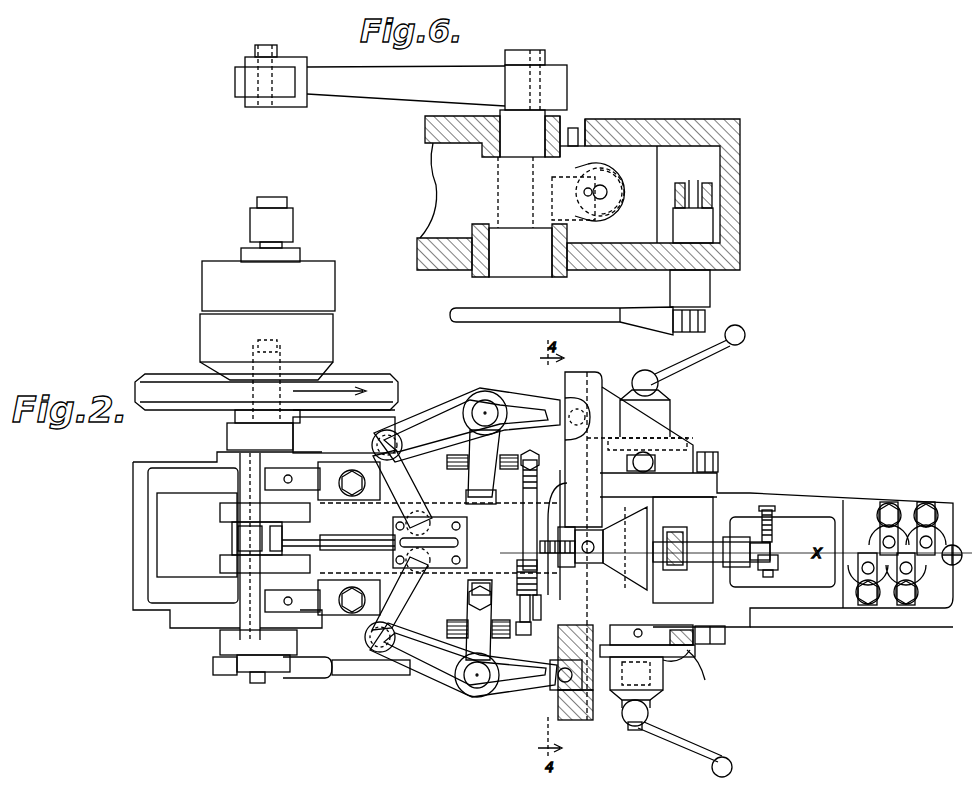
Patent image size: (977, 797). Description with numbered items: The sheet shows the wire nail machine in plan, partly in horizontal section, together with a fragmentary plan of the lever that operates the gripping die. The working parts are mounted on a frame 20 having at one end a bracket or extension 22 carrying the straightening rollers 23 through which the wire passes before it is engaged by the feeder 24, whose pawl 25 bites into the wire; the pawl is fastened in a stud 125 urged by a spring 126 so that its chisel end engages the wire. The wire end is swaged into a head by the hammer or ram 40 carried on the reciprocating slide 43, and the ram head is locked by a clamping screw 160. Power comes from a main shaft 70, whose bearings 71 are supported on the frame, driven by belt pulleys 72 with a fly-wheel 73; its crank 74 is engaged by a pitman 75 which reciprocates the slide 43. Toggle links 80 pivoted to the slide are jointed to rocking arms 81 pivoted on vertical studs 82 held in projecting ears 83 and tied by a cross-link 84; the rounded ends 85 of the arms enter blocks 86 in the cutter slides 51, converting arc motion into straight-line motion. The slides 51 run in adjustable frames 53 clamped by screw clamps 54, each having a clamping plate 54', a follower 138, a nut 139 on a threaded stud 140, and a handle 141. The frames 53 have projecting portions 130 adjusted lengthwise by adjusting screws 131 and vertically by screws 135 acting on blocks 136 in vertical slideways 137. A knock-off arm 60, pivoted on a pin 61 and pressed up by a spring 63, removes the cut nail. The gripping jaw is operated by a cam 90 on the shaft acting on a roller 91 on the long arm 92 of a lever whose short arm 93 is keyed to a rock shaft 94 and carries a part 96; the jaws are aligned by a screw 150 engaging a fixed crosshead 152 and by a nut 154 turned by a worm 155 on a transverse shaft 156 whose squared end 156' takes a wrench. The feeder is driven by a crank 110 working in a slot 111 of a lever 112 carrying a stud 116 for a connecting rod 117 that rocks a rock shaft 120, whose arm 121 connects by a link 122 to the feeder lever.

In FIG. 6, the frame 20 is at (425, 124).
In FIG. 2, the frame 20 is at (745, 462).
In FIG. 2, the bracket or extension 22 is at (851, 626).
In FIG. 2, the straightening rollers 23 is at (880, 528).
In FIG. 2, the feeder 24 is at (745, 580).
In FIG. 2, the pawl 25 is at (778, 547).
In FIG. 2, the hammer or ram 40 is at (556, 520).
In FIG. 2, the reciprocating slide 43 is at (445, 527).
In FIG. 2, the slides 51 is at (566, 567).
In FIG. 2, the adjustable frame 53 is at (580, 380).
In FIG. 2, the screw clamp 54 is at (677, 512).
In FIG. 2, the clamping plate 54' is at (696, 678).
In FIG. 2, the knock-off arm 60 is at (537, 630).
In FIG. 2, the pin 61 is at (527, 520).
In FIG. 2, the spring 63 is at (517, 582).
In FIG. 2, the main shaft 70 is at (250, 240).
In FIG. 2, the shaft 71 is at (250, 477).
In FIG. 2, the belt pulleys 72 is at (251, 340).
In FIG. 2, the fly-wheel 73 is at (172, 374).
In FIG. 2, the crank 74 is at (222, 537).
In FIG. 2, the pitman or connecting rod 75 is at (338, 542).
In FIG. 2, the toggle links 80 is at (398, 478).
In FIG. 2, the rocking arms 81 is at (440, 425).
In FIG. 2, the vertical studs 82 is at (485, 413).
In FIG. 2, the projecting ears 83 is at (508, 438).
In FIG. 2, the cross-link 84 is at (483, 467).
In FIG. 2, the rounded ends 85 is at (570, 410).
In FIG. 2, the blocks 86 is at (556, 702).
In FIG. 2, the cam 90 is at (235, 418).
In FIG. 6, the roller 91 is at (235, 80).
In FIG. 2, the roller 91 is at (227, 436).
In FIG. 6, the long arm 92 is at (380, 90).
In FIG. 2, the long arm 92 is at (344, 431).
In FIG. 6, the short arm 93 is at (597, 216).
In FIG. 6, the rock shaft 94 is at (521, 169).
In FIG. 6, the part 96 is at (607, 188).
In FIG. 2, the crank 110 is at (243, 673).
In FIG. 2, the slot 111 is at (222, 655).
In FIG. 2, the lever 112 is at (213, 668).
In FIG. 2, the stud 116 is at (258, 684).
In FIG. 6, the connecting rod 117 is at (512, 312).
In FIG. 2, the connecting rod 117 is at (350, 678).
In FIG. 6, the rock shaft 120 is at (713, 210).
In FIG. 6, the arm 121 is at (712, 192).
In FIG. 2, the arm 121 is at (674, 558).
In FIG. 2, the link 122 is at (690, 537).
In FIG. 2, the stud 125 is at (786, 578).
In FIG. 2, the spring 126 is at (770, 525).
In FIG. 2, the projecting portions 130 is at (690, 442).
In FIG. 2, the adjusting screws 131 is at (720, 458).
In FIG. 2, the adjusting screws 135 is at (648, 470).
In FIG. 2, the blocks 136 is at (660, 625).
In FIG. 2, the vertical slideway 137 is at (697, 655).
In FIG. 2, the follower 138 is at (625, 720).
In FIG. 2, the nut 139 is at (650, 713).
In FIG. 2, the threaded stud 140 is at (640, 732).
In FIG. 2, the handle 141 is at (690, 755).
In FIG. 2, the screw 150 is at (592, 553).
In FIG. 2, the fixed crosshead 152 is at (627, 548).
In FIG. 6, the nut 154 is at (616, 198).
In FIG. 6, the worm 155 is at (552, 188).
In FIG. 6, the transverse shaft 156 is at (607, 170).
In FIG. 6, the squared end 156' is at (594, 120).
In FIG. 2, the clamping screw 160 is at (474, 596).